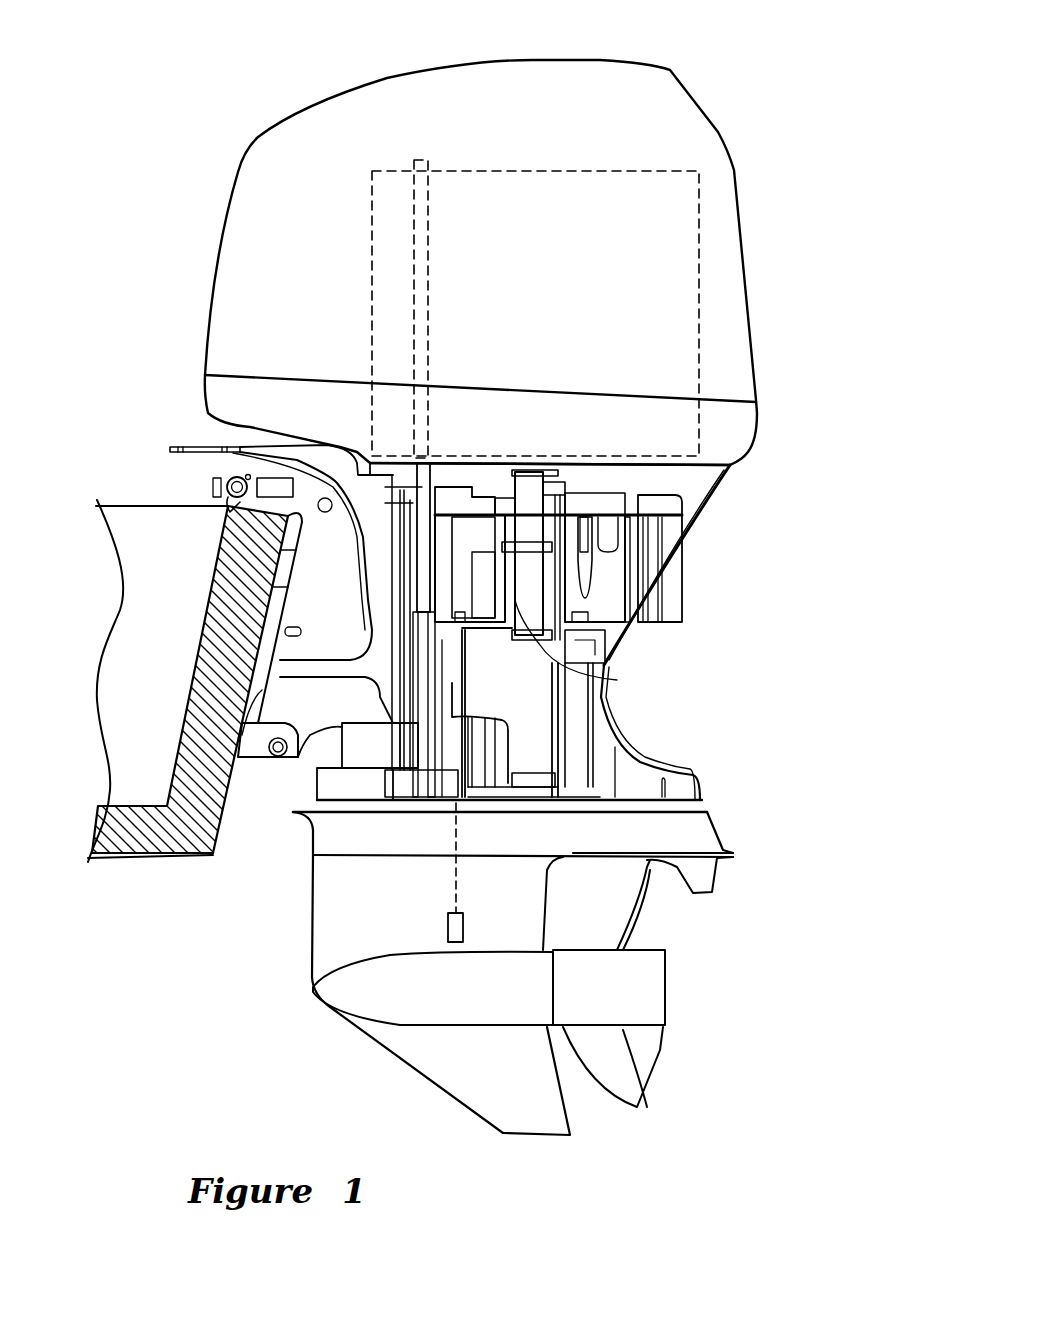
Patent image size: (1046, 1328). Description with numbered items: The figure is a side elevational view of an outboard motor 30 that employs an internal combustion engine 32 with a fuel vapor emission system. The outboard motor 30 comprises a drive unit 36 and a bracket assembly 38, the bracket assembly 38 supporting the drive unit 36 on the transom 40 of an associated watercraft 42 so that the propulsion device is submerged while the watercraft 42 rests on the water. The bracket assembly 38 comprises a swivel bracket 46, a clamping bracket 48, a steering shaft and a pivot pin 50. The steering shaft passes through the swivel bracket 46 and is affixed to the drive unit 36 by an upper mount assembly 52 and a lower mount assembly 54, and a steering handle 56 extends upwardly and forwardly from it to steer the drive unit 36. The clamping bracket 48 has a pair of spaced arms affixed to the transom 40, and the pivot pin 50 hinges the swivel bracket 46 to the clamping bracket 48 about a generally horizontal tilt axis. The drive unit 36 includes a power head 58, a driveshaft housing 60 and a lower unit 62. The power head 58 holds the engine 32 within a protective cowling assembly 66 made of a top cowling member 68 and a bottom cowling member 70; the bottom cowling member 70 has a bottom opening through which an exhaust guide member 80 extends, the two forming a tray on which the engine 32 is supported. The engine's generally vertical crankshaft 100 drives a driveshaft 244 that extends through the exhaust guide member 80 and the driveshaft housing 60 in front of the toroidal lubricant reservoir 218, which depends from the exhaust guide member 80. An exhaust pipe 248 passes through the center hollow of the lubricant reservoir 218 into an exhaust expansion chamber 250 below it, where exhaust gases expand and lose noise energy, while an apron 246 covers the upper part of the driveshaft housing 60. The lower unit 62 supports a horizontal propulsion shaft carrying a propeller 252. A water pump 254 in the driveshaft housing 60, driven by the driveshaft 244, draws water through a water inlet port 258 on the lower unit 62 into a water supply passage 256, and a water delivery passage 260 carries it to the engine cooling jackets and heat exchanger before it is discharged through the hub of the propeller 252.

The outboard motor 30 is at (700, 60).
The internal combustion engine 32 is at (497, 213).
The drive unit 36 is at (551, 653).
The bracket assembly 38 is at (262, 648).
The transom 40 is at (208, 667).
The watercraft 42 is at (250, 681).
The swivel bracket 46 is at (373, 542).
The clamping bracket 48 is at (310, 735).
The pivot pin 50 is at (230, 488).
The upper mount assembly 52 is at (377, 488).
The lower mount assembly 54 is at (357, 800).
The steering handle 56 is at (170, 447).
The power head 58 is at (554, 262).
The driveshaft housing 60 is at (617, 720).
The lower unit 62 is at (502, 969).
The protective cowling assembly 66 is at (554, 409).
The top cowling member 68 is at (758, 368).
The bottom cowling member 70 is at (598, 438).
The exhaust guide member 80 is at (567, 485).
The crankshaft 100 is at (412, 276).
The lubricant reservoir 218 is at (618, 588).
The driveshaft 244 is at (422, 575).
The apron 246 is at (685, 550).
The exhaust pipe 248 is at (588, 647).
The exhaust expansion chamber 250 is at (545, 720).
The propeller 252 is at (633, 1060).
The water pump 254 is at (402, 813).
The water supply passage 256 is at (458, 873).
The water inlet port 258 is at (463, 927).
The water delivery passage 260 is at (467, 712).